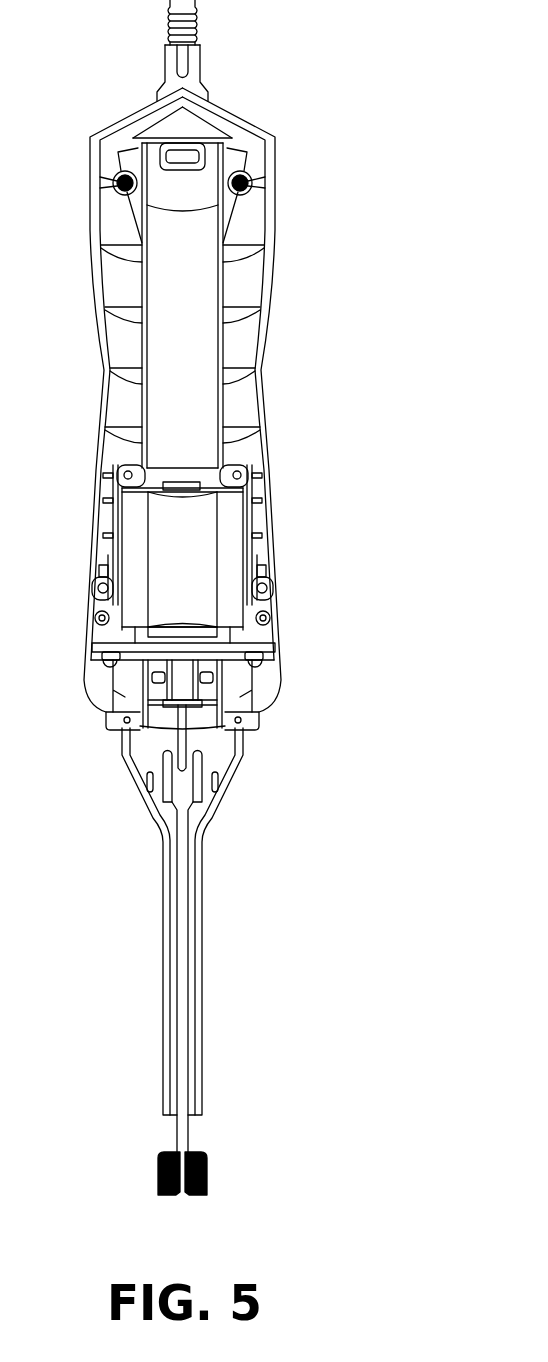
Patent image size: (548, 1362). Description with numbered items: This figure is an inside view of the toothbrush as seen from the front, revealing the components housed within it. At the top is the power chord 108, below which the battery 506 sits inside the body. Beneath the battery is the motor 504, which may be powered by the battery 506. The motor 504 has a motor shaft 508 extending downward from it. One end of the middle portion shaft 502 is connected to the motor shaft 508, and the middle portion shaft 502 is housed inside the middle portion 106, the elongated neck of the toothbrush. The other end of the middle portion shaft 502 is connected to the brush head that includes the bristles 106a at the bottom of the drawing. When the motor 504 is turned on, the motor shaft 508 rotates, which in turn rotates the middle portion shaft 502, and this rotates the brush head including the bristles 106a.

The power chord 108 is at (203, 69).
The battery 506 is at (197, 407).
The motor 504 is at (220, 582).
The motor shaft 508 is at (186, 718).
The middle portion 106 is at (202, 922).
The middle portion shaft 502 is at (190, 982).
The bristles 106a is at (207, 1162).